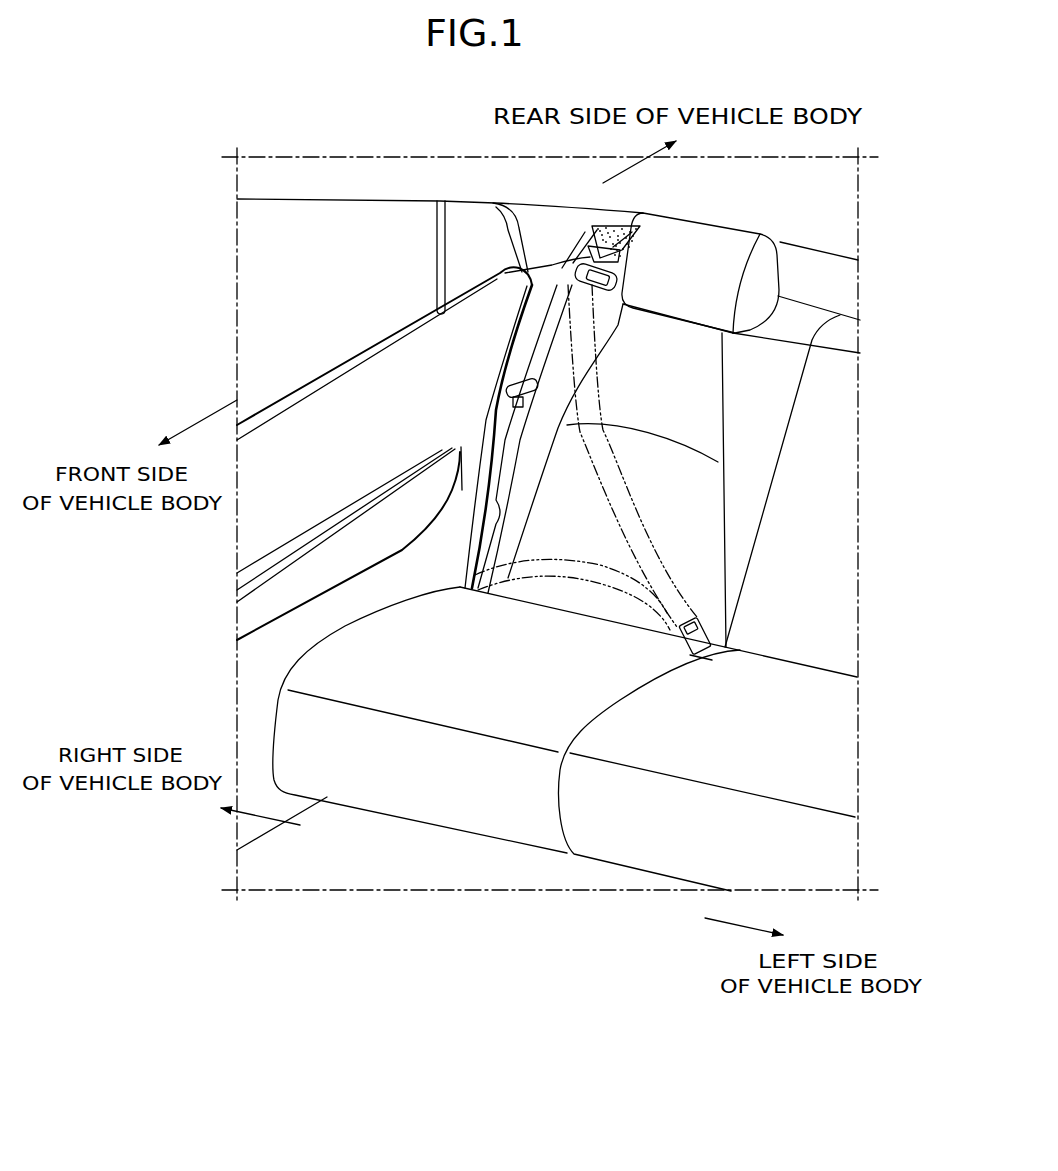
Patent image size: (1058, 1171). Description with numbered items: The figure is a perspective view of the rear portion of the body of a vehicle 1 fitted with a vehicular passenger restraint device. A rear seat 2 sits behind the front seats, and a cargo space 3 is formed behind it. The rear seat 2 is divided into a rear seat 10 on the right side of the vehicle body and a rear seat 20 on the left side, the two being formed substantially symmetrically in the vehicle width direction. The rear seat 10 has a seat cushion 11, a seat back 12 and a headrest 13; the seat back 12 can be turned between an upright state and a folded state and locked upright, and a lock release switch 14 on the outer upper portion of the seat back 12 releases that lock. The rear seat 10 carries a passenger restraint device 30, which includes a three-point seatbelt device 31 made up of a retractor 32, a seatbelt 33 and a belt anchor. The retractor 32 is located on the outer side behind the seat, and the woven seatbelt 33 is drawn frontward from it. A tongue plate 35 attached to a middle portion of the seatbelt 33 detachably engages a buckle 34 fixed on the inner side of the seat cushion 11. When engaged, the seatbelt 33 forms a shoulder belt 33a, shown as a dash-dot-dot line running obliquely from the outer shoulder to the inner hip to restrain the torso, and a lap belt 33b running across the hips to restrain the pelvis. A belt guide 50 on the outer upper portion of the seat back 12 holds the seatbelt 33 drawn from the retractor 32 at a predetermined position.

The vehicle 1 is at (235, 268).
The rear seat 2 is at (838, 311).
The cargo space 3 is at (828, 274).
The rear seat on the right side of the vehicle body 10 is at (561, 483).
The seat cushion 11 is at (470, 699).
The seat back 12 is at (676, 378).
The headrest 13 is at (706, 288).
The lock release switch 14 is at (596, 312).
The rear seat on the left side of the vehicle body 20 is at (830, 568).
The passenger restraint device 30 is at (496, 411).
The three-point seatbelt device 31 is at (524, 344).
The retractor 32 is at (623, 235).
The seatbelt 33 is at (522, 312).
The shoulder belt 33a is at (643, 527).
The lap belt 33b is at (593, 587).
The buckle 34 is at (703, 652).
The tongue plate 35 is at (508, 388).
The belt guide 50 is at (572, 257).